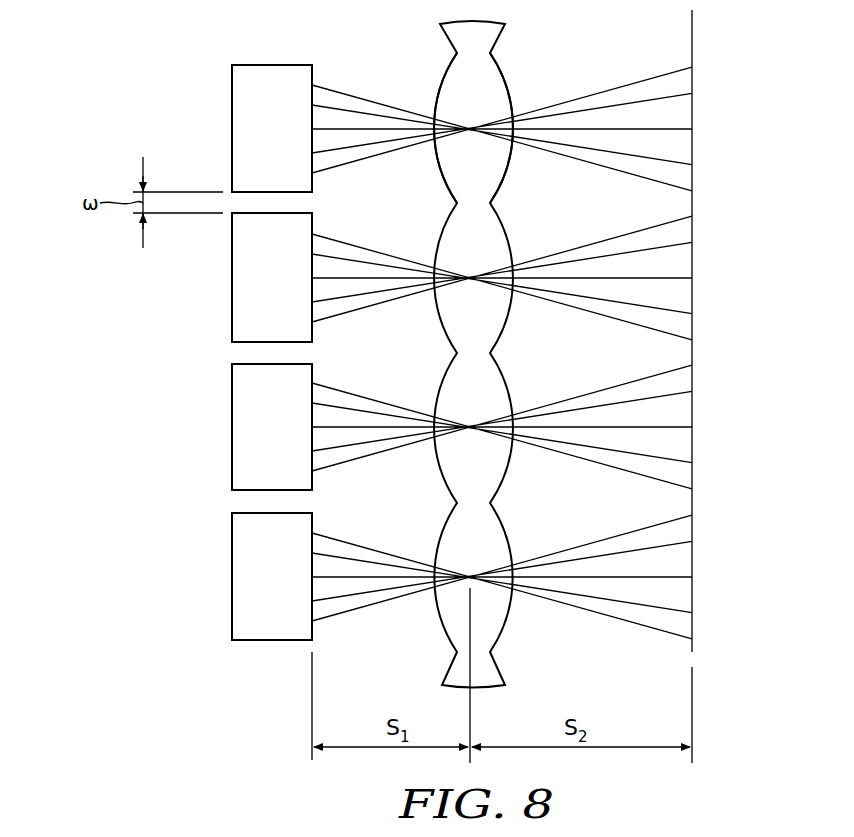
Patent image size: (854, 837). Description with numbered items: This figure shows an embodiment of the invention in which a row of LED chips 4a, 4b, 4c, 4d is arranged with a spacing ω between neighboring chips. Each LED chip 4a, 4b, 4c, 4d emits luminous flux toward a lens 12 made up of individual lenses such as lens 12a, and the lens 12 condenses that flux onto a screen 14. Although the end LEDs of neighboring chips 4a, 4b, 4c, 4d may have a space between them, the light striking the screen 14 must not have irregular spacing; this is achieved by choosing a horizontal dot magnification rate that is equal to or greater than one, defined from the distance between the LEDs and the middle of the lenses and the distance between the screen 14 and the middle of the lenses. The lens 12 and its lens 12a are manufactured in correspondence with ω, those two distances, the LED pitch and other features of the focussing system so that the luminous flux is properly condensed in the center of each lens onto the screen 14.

The LED chip 4a is at (232, 96).
The LED chip 4b is at (232, 277).
The LED chip 4c is at (232, 426).
The LED chip 4d is at (232, 576).
The lens 12 is at (520, 49).
The lens 12a is at (452, 74).
The screen 14 is at (695, 43).